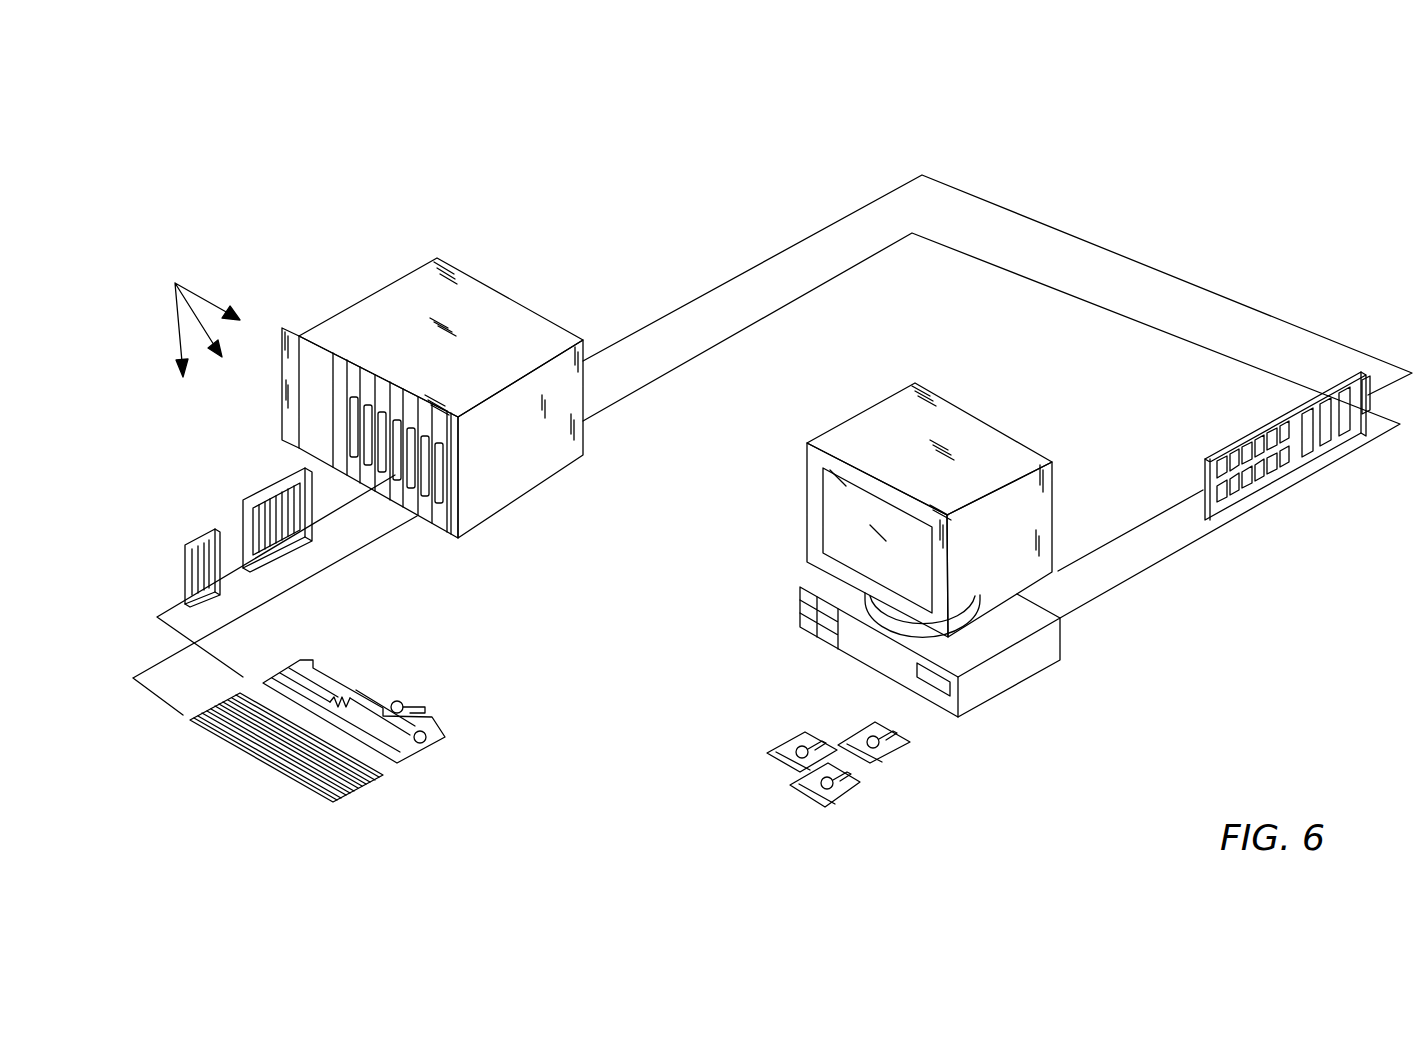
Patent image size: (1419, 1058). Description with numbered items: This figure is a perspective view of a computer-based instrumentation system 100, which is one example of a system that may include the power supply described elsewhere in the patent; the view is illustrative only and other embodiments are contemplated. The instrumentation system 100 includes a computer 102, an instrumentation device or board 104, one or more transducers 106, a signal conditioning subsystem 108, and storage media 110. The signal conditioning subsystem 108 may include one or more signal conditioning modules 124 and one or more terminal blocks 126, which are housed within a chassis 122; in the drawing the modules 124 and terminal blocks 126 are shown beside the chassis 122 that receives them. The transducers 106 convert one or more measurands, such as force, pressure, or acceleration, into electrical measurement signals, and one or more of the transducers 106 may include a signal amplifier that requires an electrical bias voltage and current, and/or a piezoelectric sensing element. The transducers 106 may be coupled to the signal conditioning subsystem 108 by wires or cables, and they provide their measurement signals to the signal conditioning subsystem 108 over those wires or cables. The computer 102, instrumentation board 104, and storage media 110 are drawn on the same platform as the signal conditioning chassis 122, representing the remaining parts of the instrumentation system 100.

The computer-based instrumentation system 100 is at (1198, 165).
The computer 102 is at (908, 393).
The instrumentation device or board 104 is at (1225, 445).
The transducers 106 is at (388, 770).
The signal conditioning subsystem 108 is at (191, 312).
The storage media 110 is at (842, 788).
The chassis 122 is at (393, 287).
The signal conditioning modules 124 is at (263, 492).
The terminal blocks 126 is at (202, 540).